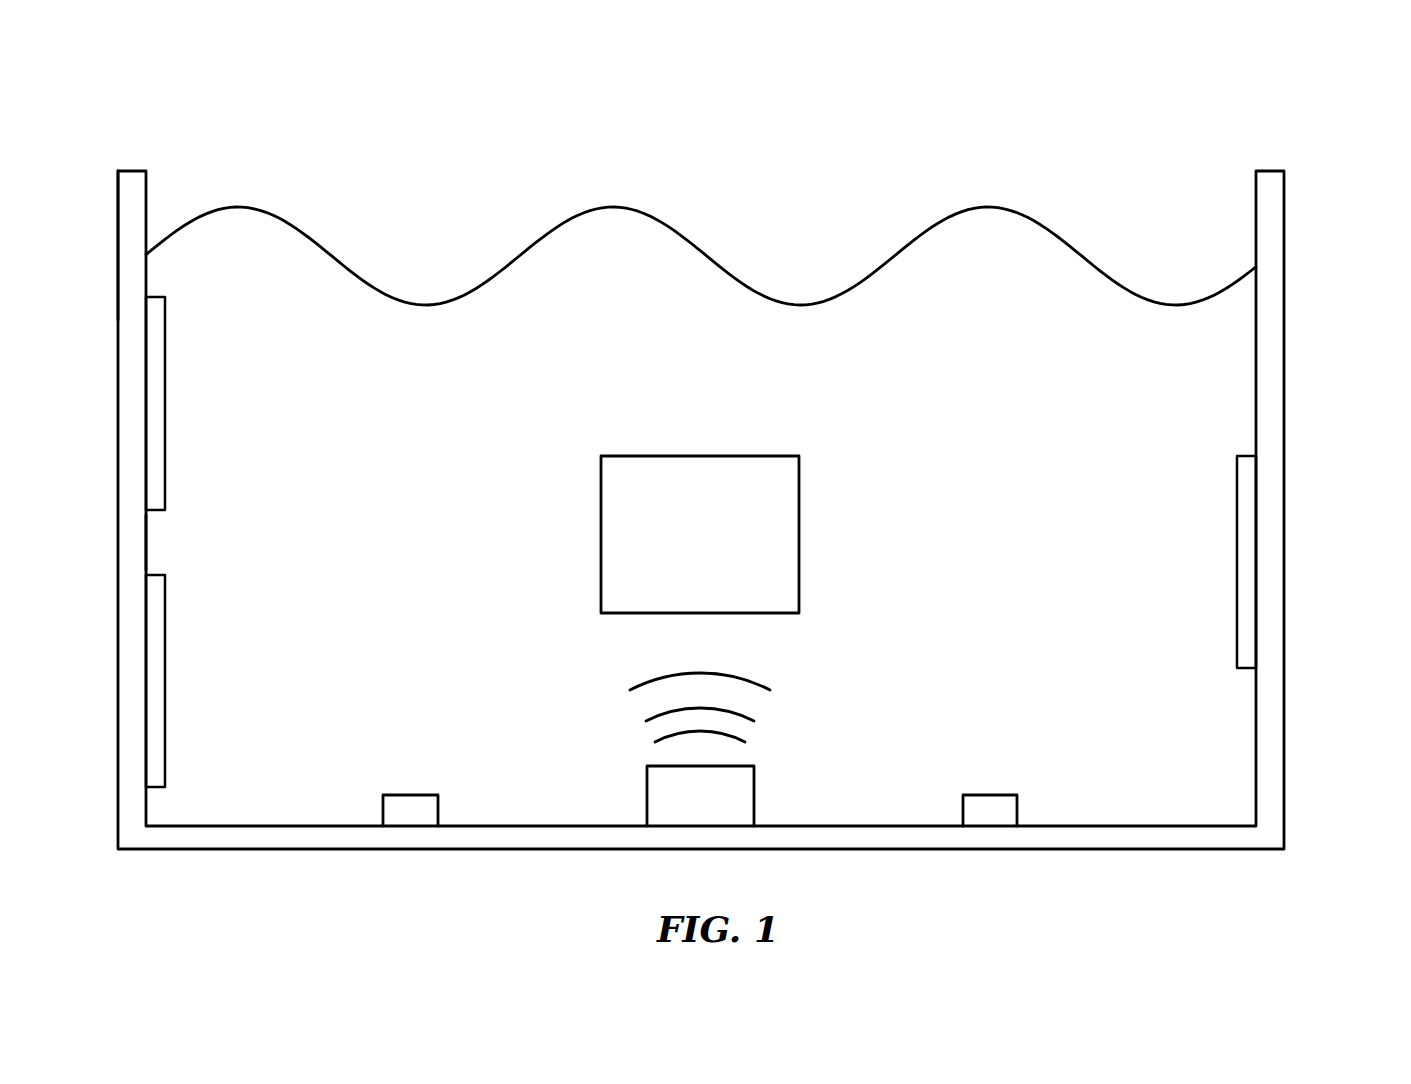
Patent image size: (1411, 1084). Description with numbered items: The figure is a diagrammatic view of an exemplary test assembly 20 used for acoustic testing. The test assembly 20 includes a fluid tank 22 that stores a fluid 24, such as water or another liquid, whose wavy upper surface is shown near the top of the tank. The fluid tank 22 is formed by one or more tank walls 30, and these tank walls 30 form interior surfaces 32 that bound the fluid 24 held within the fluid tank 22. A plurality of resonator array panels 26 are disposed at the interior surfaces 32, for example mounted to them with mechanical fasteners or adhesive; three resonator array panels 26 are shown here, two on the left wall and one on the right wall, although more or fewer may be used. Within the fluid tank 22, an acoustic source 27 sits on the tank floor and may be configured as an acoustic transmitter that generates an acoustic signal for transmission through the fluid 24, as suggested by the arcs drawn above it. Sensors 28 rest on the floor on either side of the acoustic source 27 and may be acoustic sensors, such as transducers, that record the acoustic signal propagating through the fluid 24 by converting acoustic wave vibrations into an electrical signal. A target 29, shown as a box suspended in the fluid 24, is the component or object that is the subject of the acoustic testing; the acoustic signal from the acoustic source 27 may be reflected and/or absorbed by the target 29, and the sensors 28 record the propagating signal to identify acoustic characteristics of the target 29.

The test assembly 20 is at (1292, 116).
The fluid tank 22 is at (1292, 345).
The fluid 24 is at (722, 369).
The resonator array panels 26 is at (155, 358).
The acoustic source 27 is at (744, 790).
The sensor 28 is at (428, 803).
The target 29 is at (788, 485).
The tank walls 30 is at (131, 244).
The interior surfaces 32 is at (147, 540).